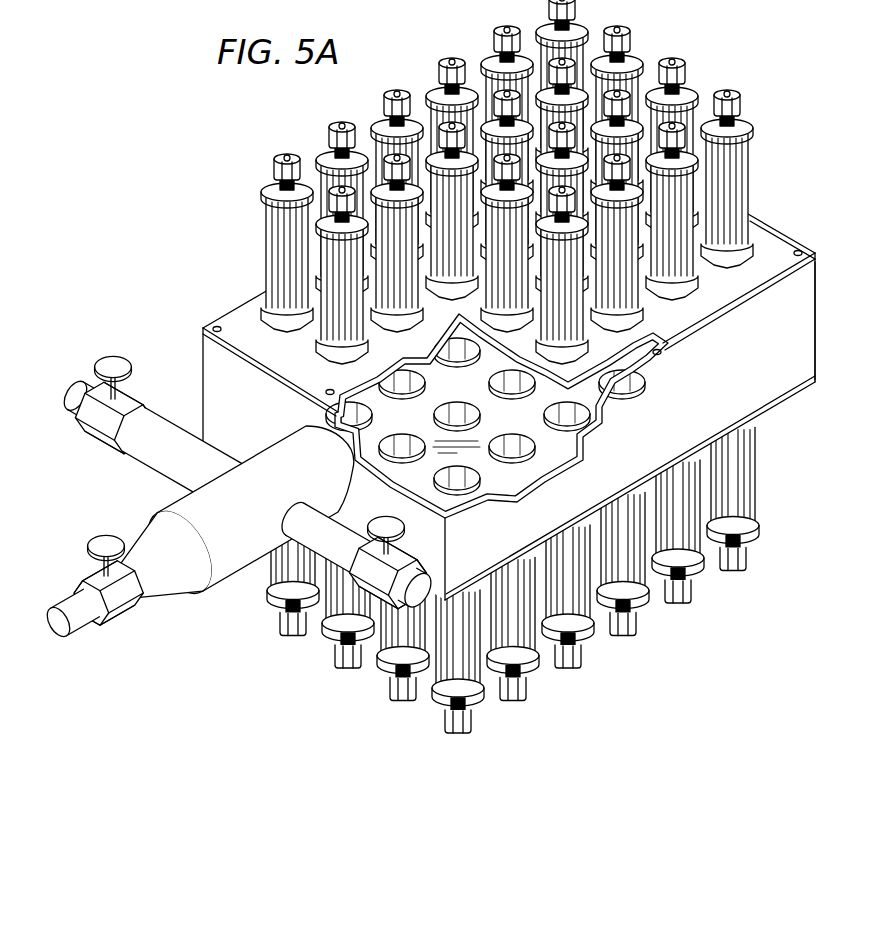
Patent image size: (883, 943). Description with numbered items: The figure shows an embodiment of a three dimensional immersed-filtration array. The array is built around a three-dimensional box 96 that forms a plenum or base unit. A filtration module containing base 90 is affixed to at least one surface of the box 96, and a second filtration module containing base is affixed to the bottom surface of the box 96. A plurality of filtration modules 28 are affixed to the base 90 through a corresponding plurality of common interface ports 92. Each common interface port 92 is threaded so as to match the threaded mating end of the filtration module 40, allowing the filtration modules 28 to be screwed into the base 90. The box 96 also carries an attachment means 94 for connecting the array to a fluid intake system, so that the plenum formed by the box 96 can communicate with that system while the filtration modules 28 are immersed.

The filtration module 28 is at (738, 170).
The threaded mating end of the filtration module 40 is at (568, 427).
The base 90 is at (242, 326).
The common interface port 92 is at (785, 242).
The attachment means 94 is at (308, 426).
The box 96 is at (793, 328).